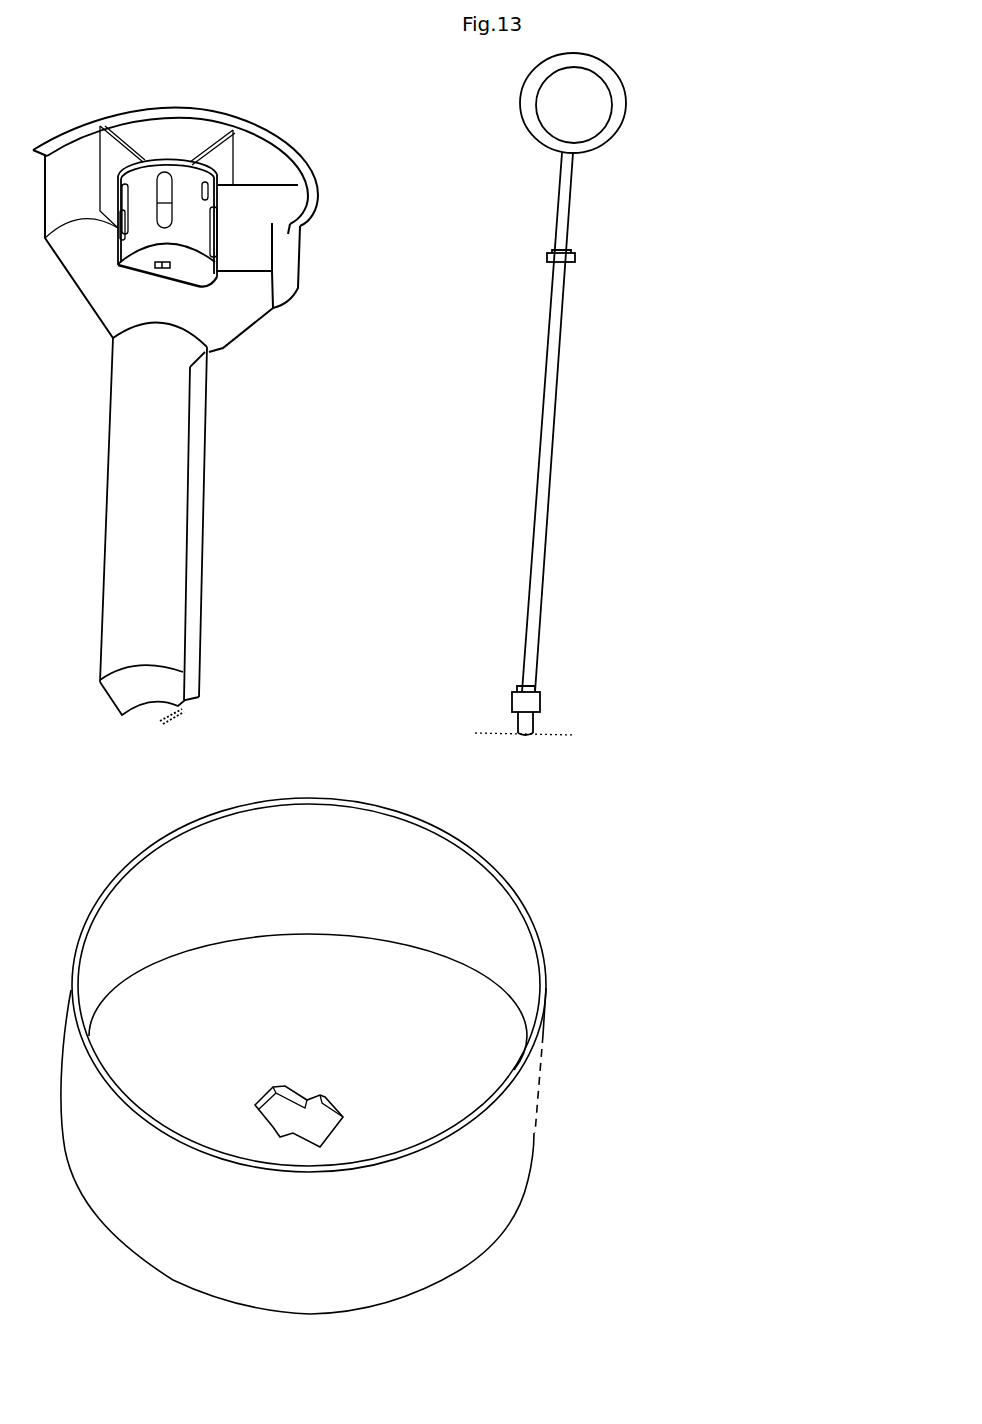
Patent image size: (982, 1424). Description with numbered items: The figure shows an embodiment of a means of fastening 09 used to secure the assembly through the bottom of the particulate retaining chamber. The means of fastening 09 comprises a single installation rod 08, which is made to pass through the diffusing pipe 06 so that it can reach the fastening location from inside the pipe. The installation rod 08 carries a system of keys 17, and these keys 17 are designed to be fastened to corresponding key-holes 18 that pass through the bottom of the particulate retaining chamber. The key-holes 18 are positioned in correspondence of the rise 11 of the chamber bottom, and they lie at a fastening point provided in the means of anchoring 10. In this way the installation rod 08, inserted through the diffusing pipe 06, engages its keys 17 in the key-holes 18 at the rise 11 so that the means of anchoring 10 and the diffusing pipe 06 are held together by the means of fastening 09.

The diffusing pipe 06 is at (223, 431).
The installation rod 08 is at (562, 383).
The means of fastening 09 is at (801, 884).
The means of anchoring 10 is at (219, 153).
The rise 11 is at (518, 435).
The keys 17 is at (577, 253).
The key-holes 18 is at (170, 270).